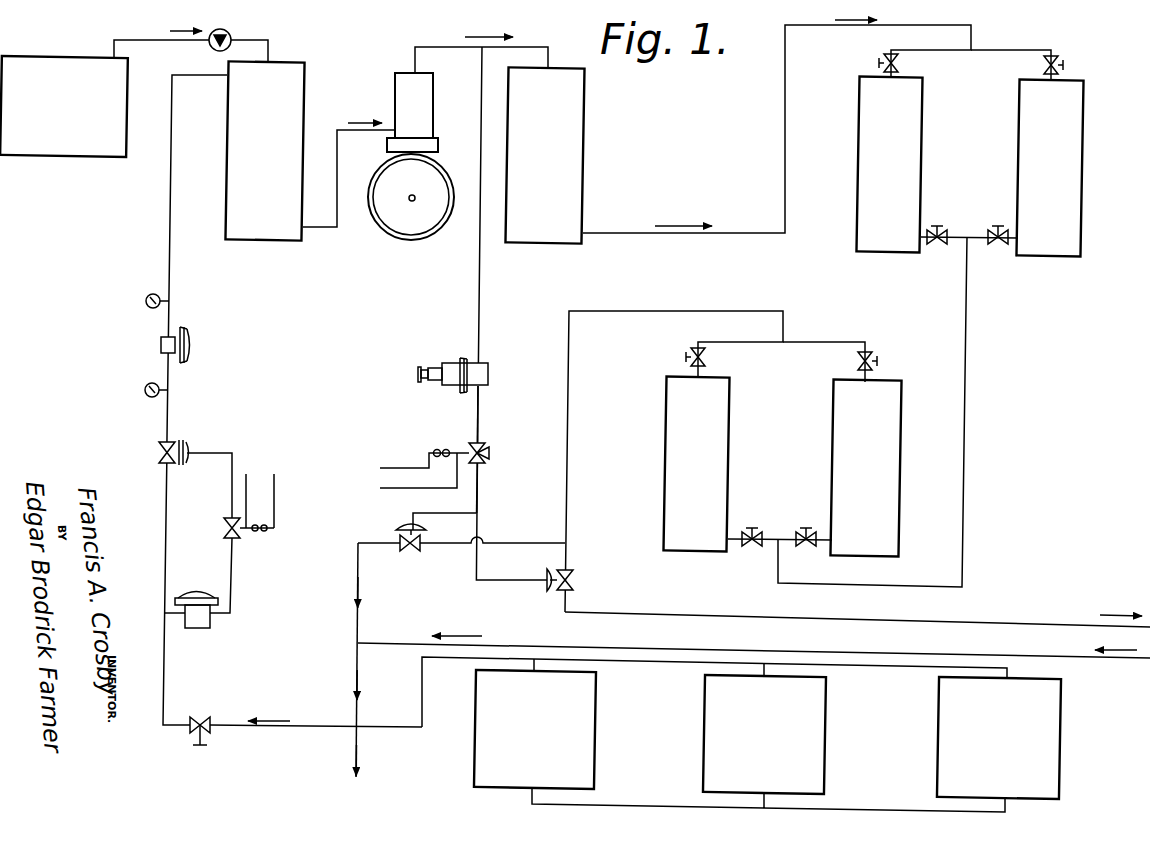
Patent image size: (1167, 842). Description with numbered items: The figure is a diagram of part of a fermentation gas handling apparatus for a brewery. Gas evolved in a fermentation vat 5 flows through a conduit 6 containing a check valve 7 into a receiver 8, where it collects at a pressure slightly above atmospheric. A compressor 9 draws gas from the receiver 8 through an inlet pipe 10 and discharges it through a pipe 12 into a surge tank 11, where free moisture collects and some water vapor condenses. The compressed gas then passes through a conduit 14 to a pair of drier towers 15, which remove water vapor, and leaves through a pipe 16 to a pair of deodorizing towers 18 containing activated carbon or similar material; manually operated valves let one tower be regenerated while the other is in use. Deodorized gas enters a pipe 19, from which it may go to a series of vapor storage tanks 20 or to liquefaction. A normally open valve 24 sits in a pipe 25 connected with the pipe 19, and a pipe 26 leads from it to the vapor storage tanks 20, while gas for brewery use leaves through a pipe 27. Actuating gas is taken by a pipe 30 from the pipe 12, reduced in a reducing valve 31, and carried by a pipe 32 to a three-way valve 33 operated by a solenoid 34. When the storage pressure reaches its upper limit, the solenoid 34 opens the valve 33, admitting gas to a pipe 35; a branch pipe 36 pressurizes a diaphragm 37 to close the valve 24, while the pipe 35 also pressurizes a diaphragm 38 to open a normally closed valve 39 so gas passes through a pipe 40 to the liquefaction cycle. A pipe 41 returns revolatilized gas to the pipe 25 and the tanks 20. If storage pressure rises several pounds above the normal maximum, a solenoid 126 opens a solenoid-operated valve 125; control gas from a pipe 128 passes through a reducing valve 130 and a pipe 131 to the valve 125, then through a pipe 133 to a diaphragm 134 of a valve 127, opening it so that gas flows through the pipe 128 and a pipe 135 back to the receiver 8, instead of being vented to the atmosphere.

The fermentation vat 5 is at (65, 157).
The conduit 6 is at (138, 38).
The check valve 7 is at (228, 32).
The receiver 8 is at (300, 62).
The compressor 9 is at (454, 182).
The inlet pipe 10 is at (335, 233).
The surge tank 11 is at (585, 105).
The pipe 12 is at (460, 44).
The conduit 14 is at (785, 99).
The drier towers 15 is at (921, 108).
The pipe 16 is at (967, 300).
The deodorizing towers 18 is at (665, 390).
The pipe 19 is at (763, 312).
The vapor storage tanks 20 is at (595, 704).
The valve 24 is at (406, 552).
The pipe 25 is at (516, 543).
The pipe 26 is at (410, 726).
The pipe 27 is at (358, 762).
The pipe 30 is at (480, 272).
The reducing valve 31 is at (488, 376).
The pipe 32 is at (481, 408).
The three-way valve 33 is at (488, 452).
The solenoid 34 is at (436, 450).
The pipe 35 is at (480, 487).
The branch pipe 36 is at (460, 514).
The diaphragm 37 is at (402, 523).
The diaphragm 38 is at (542, 587).
The valve 39 is at (574, 580).
The pipe 40 is at (712, 613).
The pipe 41 is at (372, 647).
The solenoid-operated valve 125 is at (224, 550).
The solenoid 126 is at (258, 534).
The valve 127 is at (159, 452).
The pipe 128 is at (164, 529).
The reducing valve 130 is at (205, 621).
The pipe 131 is at (231, 592).
The pipe 133 is at (236, 455).
The diaphragm 134 is at (161, 345).
The pipe 135 is at (172, 258).